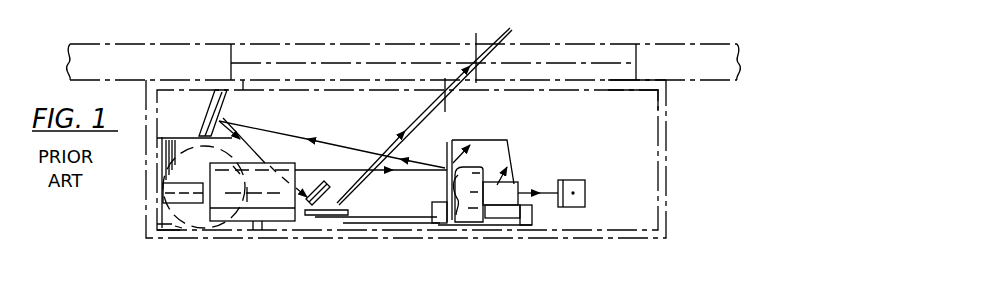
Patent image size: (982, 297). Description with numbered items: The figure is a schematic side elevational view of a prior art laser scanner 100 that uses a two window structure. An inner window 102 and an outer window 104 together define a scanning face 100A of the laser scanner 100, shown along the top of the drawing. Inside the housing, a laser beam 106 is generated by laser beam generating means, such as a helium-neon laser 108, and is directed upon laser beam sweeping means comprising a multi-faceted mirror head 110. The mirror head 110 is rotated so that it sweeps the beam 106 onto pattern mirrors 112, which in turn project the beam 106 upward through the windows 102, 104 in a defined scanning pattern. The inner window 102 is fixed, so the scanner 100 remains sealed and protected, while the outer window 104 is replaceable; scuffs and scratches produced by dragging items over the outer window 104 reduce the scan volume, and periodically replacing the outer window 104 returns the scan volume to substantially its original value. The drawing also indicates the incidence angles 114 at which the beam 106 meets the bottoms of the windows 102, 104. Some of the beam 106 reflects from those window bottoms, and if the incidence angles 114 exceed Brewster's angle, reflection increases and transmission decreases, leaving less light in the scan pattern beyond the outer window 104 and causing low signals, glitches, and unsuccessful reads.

The laser scanner 100 is at (731, 178).
The scanning face 100A is at (653, 44).
The inner window 102 is at (548, 88).
The outer window 104 is at (283, 48).
The laser beam 106 is at (425, 113).
The helium-neon laser 108 is at (285, 223).
The multi-faceted mirror head 110 is at (512, 108).
The pattern mirrors 112 is at (221, 102).
The incidence angles 114 is at (472, 79).